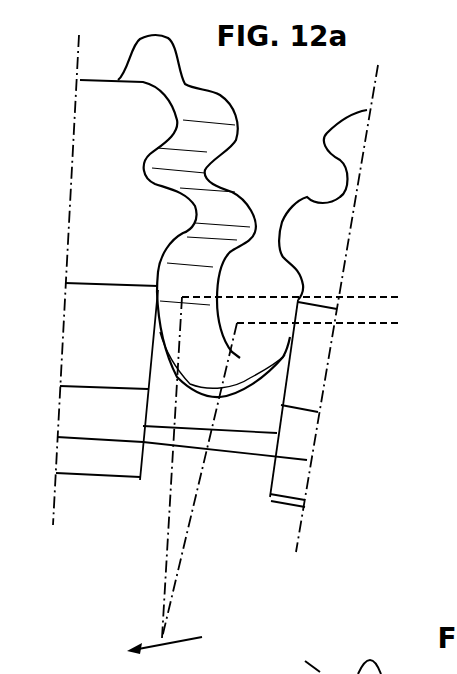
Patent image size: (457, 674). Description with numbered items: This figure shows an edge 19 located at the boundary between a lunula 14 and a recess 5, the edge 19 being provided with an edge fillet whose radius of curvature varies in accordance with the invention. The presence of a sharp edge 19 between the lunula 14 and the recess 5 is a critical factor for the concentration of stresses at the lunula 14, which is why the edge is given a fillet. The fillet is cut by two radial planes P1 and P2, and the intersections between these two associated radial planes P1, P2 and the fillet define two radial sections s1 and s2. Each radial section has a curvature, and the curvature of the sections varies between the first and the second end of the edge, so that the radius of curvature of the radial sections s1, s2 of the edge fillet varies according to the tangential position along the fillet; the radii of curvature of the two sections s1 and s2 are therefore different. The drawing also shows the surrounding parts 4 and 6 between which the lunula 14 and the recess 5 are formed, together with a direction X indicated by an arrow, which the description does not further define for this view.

The disc 4 is at (118, 520).
The recess 5 is at (264, 323).
The blade root 6 is at (118, 134).
The lunula 14 is at (230, 422).
The edge 19 is at (243, 380).
The first radial section s1 is at (198, 370).
The second radial section s2 is at (200, 385).
The first radial plane P1 is at (362, 295).
The second radial plane P2 is at (359, 325).
The axis direction X is at (164, 653).